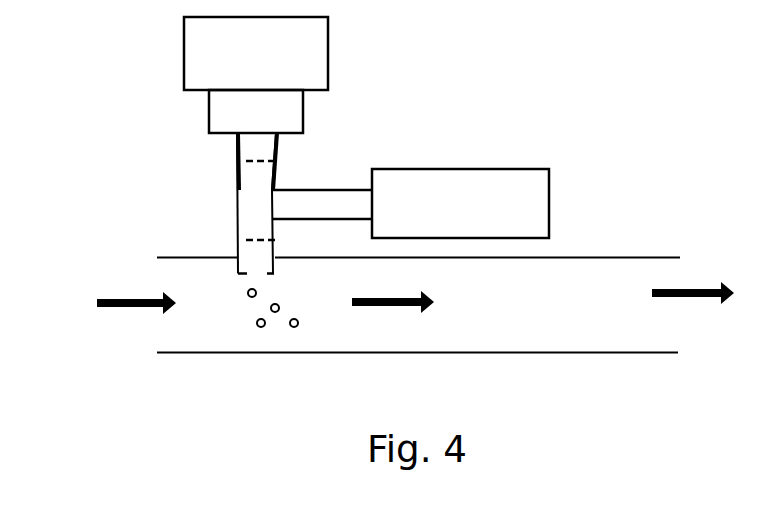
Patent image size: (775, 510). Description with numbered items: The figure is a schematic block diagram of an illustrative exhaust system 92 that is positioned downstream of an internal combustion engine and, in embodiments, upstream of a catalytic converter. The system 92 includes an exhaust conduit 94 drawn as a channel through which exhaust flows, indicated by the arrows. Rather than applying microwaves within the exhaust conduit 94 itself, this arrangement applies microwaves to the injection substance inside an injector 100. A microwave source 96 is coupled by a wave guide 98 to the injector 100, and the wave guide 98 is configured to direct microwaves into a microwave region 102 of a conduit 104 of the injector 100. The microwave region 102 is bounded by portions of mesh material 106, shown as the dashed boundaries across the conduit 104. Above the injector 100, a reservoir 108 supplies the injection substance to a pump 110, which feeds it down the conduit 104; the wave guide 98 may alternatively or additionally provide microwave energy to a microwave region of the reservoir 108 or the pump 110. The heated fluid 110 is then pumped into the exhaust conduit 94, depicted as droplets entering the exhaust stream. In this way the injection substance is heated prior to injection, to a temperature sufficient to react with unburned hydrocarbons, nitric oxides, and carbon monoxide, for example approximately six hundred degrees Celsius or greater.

The exhaust system 92 is at (612, 40).
The exhaust conduit 94 is at (588, 355).
The microwave source 96 is at (551, 205).
The wave guide 98 is at (322, 188).
The injector 100 is at (140, 80).
The microwave region 102 is at (240, 229).
The conduit 104 is at (237, 173).
The mesh material 106 is at (245, 161).
The reservoir 108 is at (328, 52).
The pump 110 is at (303, 112).